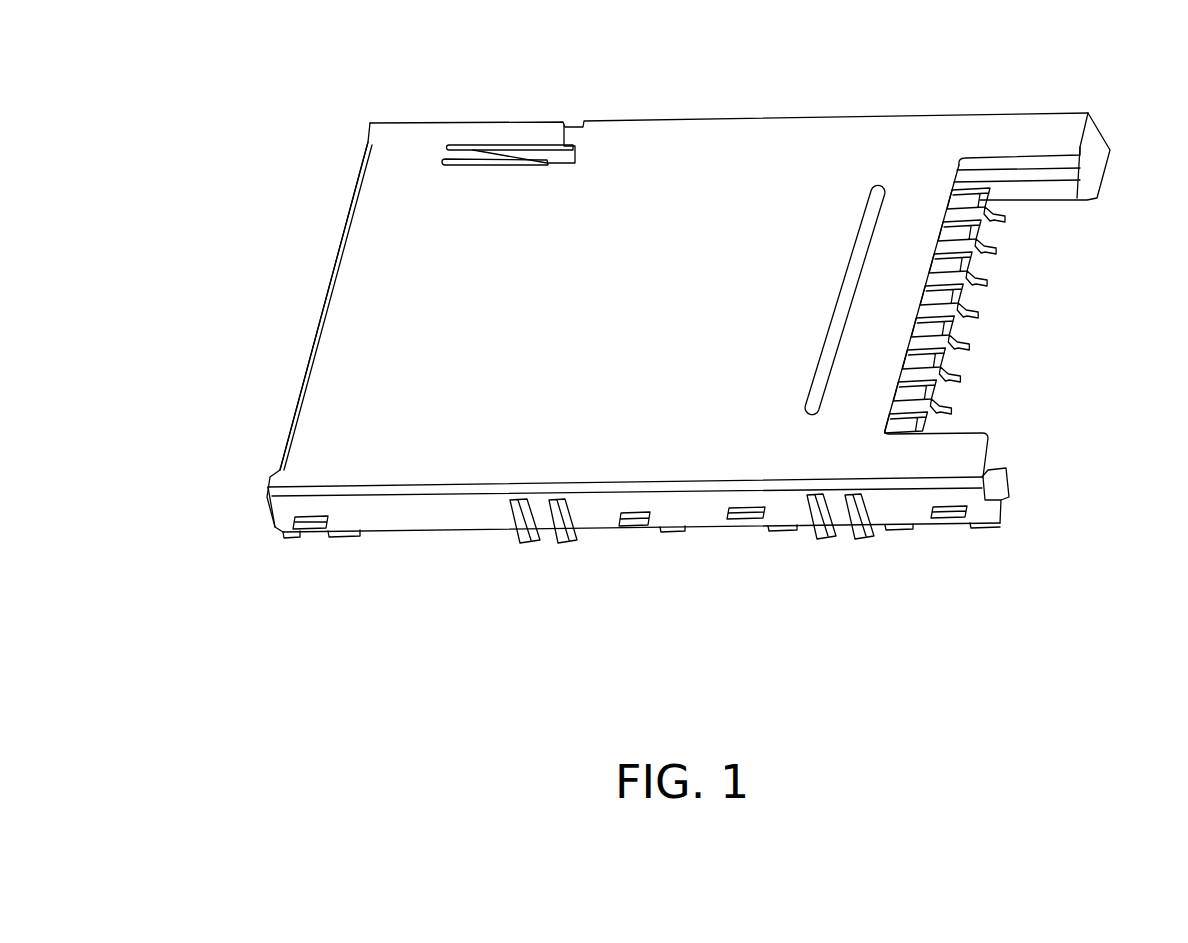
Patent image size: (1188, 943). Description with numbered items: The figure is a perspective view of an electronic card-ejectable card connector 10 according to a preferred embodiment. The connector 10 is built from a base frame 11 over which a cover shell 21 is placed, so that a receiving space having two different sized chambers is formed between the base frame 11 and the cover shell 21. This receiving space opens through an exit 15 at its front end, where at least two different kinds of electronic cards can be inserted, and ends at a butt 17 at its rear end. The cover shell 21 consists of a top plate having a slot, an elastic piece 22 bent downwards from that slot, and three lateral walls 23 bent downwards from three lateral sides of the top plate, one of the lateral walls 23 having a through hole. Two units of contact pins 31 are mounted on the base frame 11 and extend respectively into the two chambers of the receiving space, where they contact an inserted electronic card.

The electronic card-ejectable card connector 10 is at (630, 337).
The base frame 11 is at (1042, 207).
The exit 15 is at (992, 315).
The butt 17 is at (330, 279).
The cover shell 21 is at (690, 142).
The elastic piece 22 is at (493, 145).
The lateral walls 23 is at (455, 515).
The contact pins 31 is at (955, 390).